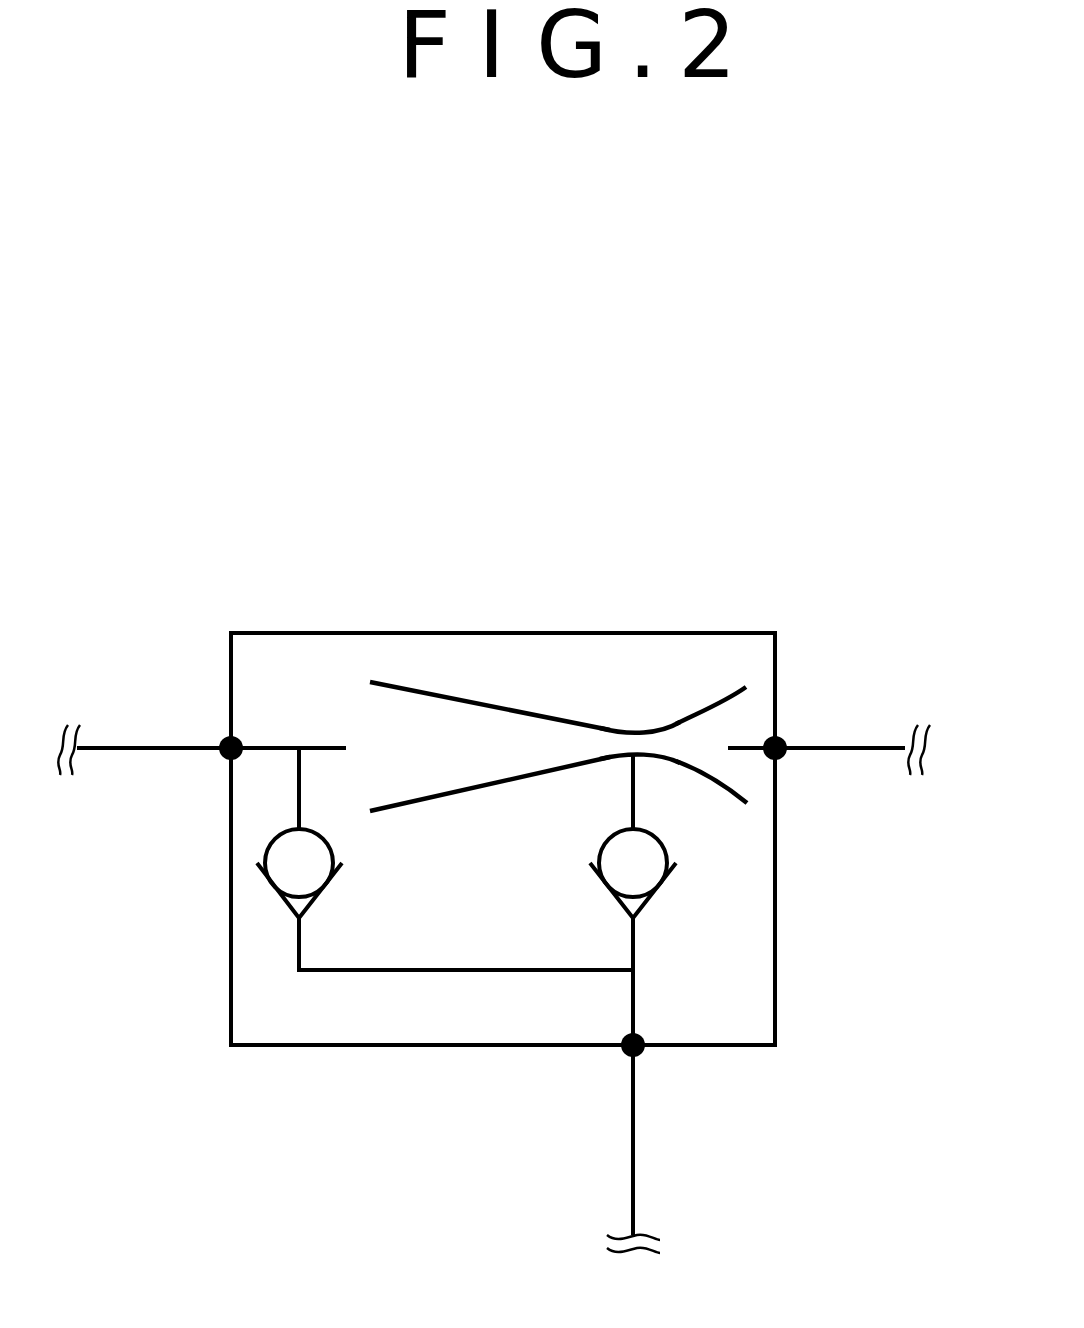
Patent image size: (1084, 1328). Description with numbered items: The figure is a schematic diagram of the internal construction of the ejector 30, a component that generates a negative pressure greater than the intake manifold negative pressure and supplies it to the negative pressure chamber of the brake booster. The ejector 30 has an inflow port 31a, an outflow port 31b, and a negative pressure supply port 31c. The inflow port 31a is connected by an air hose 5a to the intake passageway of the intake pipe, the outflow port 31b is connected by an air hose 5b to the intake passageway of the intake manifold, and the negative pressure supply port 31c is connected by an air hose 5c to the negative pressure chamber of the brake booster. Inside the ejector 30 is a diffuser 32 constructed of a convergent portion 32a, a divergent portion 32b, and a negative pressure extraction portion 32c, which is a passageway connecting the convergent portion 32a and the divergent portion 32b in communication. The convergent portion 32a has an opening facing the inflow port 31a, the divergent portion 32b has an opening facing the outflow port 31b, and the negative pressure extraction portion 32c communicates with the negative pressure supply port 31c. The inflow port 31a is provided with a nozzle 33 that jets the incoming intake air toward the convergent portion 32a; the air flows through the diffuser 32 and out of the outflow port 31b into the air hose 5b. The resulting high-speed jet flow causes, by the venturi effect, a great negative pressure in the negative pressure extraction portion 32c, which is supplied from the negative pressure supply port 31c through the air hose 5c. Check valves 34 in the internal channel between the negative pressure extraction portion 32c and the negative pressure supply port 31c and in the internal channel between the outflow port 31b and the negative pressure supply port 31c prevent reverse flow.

The ejector 30 is at (343, 633).
The air hose 5a is at (843, 748).
The air hose 5b is at (118, 748).
The air hose 5c is at (633, 1165).
The inflow port 31a is at (785, 740).
The outflow port 31b is at (225, 755).
The negative pressure supply port 31c is at (625, 1050).
The diffuser 32 is at (591, 609).
The convergent portion 32a is at (743, 645).
The divergent portion 32b is at (487, 700).
The negative pressure extraction portion 32c is at (635, 733).
The nozzle 33 is at (745, 752).
The check valve 34 is at (268, 883).